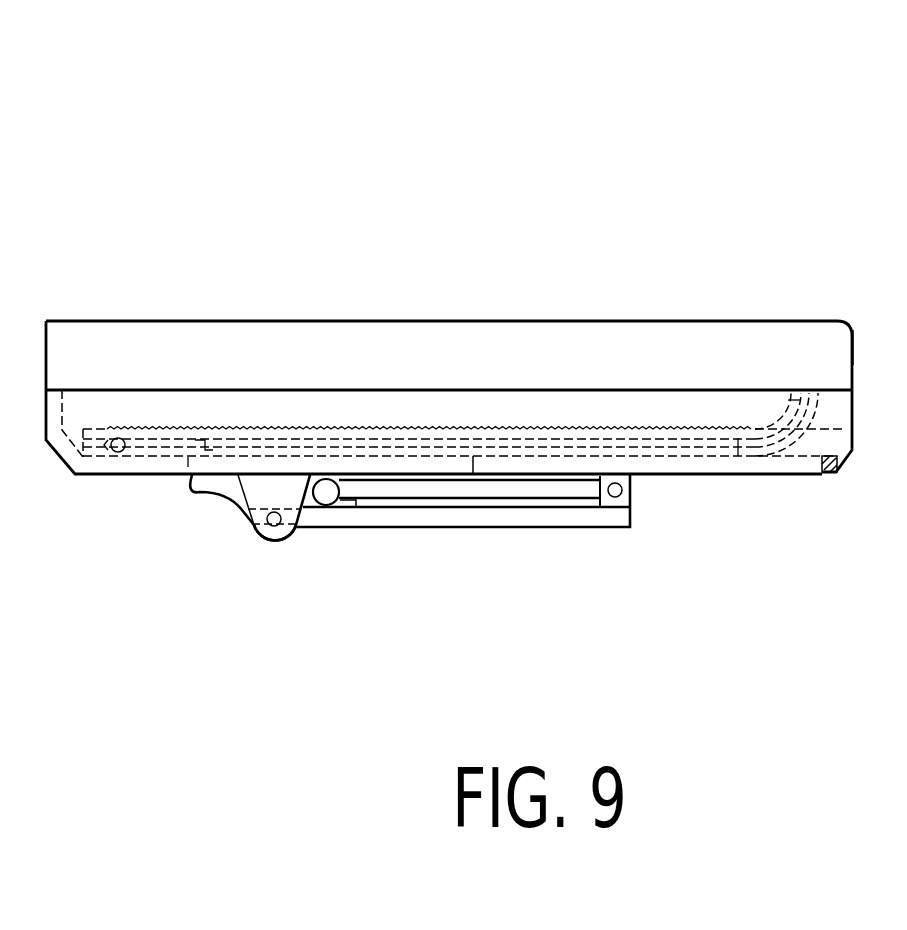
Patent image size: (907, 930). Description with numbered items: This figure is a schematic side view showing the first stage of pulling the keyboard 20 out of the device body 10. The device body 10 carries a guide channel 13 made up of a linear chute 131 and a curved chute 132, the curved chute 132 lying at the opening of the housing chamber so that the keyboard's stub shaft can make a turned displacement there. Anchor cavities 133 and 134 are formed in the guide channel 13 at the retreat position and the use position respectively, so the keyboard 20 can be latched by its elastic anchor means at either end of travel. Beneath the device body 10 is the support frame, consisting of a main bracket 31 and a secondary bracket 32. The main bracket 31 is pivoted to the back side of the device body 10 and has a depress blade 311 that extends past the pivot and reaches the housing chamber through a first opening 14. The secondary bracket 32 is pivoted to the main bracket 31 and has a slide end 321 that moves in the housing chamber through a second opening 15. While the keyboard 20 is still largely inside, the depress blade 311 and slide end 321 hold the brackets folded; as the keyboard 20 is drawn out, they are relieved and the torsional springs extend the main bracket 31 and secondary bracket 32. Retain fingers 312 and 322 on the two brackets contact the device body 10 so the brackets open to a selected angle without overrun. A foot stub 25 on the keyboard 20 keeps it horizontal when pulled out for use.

The device body 10 is at (608, 308).
The guide channel 13 is at (448, 443).
The linear chute 131 is at (653, 428).
The curved chute 132 is at (268, 448).
The anchor cavity 133 is at (110, 457).
The anchor cavity 134 is at (738, 440).
The first opening 14 is at (195, 492).
The second opening 15 is at (395, 463).
The keyboard 20 is at (853, 330).
The foot stub 25 is at (833, 474).
The main bracket 31 is at (457, 513).
The depress blade 311 is at (217, 483).
The retain finger 312 is at (231, 524).
The secondary bracket 32 is at (555, 492).
The slide end 321 is at (331, 480).
The retain finger 322 is at (355, 505).